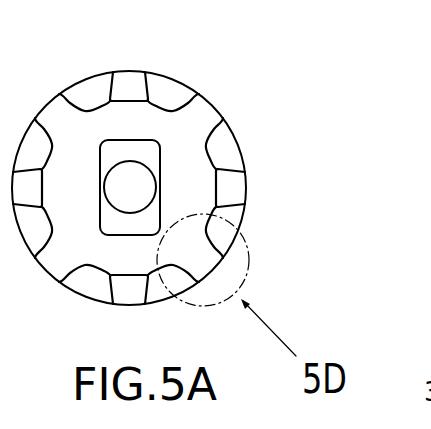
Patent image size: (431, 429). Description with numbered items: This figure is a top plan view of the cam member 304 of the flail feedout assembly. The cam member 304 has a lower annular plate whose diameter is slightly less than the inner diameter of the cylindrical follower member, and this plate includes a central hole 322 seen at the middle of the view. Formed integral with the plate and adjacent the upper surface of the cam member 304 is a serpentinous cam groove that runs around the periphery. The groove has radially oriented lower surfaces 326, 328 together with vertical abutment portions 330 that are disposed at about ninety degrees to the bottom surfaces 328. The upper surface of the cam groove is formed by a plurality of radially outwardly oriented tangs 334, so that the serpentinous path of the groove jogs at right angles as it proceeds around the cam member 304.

The cam member 304 is at (320, 105).
The central hole 322 is at (125, 203).
The radially oriented lower surface 326 is at (168, 95).
The radially oriented lower surface 328 is at (229, 156).
The vertical abutment portion 330 is at (222, 152).
The radially outwardly oriented tang 334 is at (236, 272).